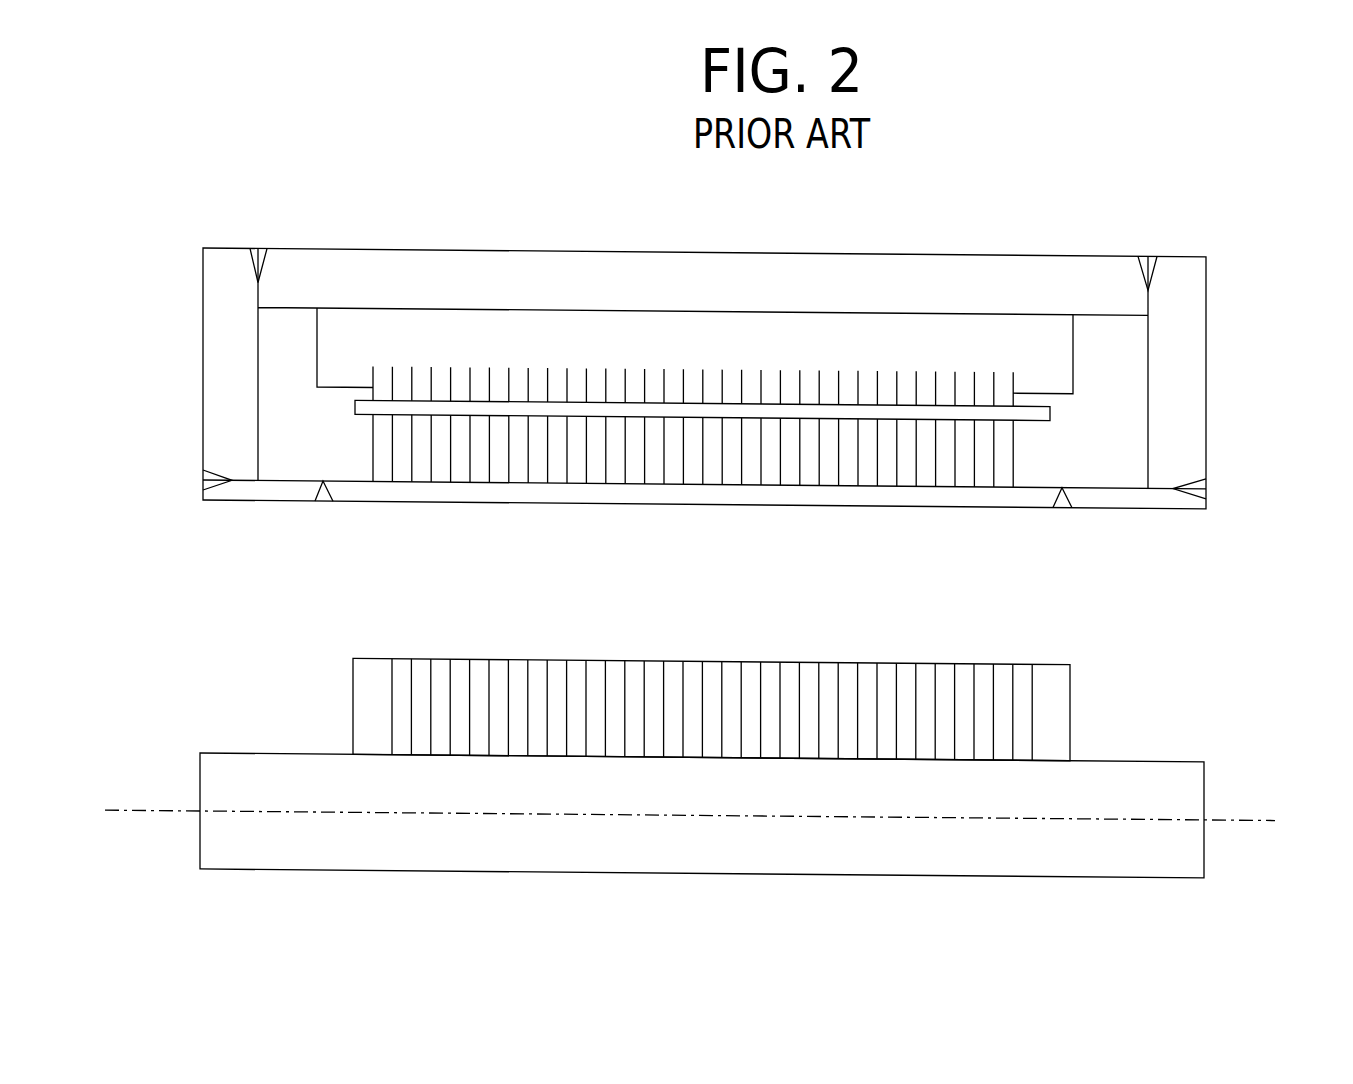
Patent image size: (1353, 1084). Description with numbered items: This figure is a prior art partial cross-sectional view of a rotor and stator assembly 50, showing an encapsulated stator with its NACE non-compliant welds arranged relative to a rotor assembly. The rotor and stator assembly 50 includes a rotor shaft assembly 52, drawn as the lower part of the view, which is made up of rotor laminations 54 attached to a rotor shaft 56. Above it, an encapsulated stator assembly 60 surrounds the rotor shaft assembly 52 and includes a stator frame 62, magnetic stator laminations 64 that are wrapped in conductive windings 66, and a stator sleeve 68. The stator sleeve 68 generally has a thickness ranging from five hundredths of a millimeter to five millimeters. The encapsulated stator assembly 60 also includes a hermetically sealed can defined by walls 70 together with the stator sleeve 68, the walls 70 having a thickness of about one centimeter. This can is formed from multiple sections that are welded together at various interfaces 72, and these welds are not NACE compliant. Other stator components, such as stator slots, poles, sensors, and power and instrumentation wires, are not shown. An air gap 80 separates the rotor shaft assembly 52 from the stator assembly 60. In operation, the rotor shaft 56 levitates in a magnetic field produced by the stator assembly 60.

The rotor and stator assembly 50 is at (172, 238).
The rotor shaft assembly 52 is at (1283, 665).
The rotor laminations 54 is at (580, 658).
The rotor shaft 56 is at (258, 753).
The encapsulated stator assembly 60 is at (1283, 258).
The stator frame 62 is at (317, 358).
The magnetic stator laminations 64 is at (766, 358).
The conductive windings 66 is at (1036, 421).
The stator sleeve 68 is at (686, 507).
The walls 70 is at (678, 250).
The interfaces 72 is at (258, 248).
The air gap 80 is at (1283, 512).